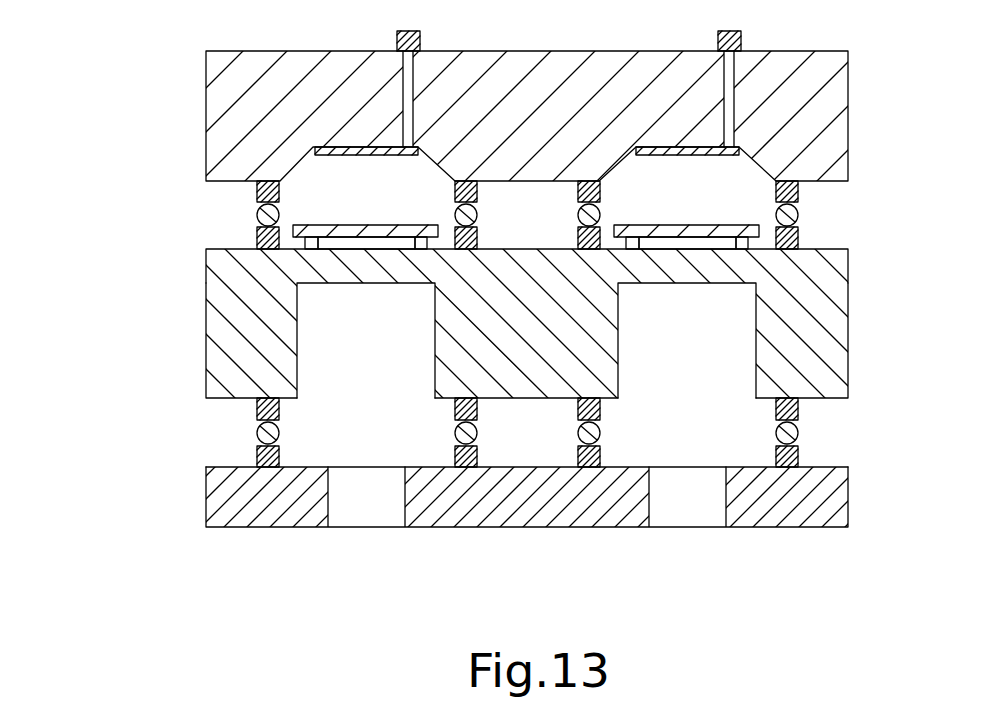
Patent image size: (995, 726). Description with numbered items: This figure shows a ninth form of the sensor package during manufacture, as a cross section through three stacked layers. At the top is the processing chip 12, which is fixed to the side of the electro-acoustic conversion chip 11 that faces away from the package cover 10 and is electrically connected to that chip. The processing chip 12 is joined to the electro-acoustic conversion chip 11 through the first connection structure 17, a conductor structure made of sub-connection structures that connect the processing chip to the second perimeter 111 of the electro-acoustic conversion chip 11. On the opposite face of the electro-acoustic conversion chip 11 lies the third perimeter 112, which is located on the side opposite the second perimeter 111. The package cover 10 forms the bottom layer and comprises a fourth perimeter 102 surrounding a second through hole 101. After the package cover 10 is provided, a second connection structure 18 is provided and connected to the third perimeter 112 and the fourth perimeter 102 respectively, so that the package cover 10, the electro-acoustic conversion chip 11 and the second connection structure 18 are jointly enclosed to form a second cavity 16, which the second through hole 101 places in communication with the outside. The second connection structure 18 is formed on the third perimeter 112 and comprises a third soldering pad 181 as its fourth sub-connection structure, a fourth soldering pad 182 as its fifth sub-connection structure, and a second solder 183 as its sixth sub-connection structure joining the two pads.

The package cover 10 is at (442, 534).
The second through hole 101 is at (367, 520).
The fourth perimeter 102 is at (203, 467).
The electro-acoustic conversion chip 11 is at (446, 428).
The second perimeter 111 is at (237, 249).
The third perimeter 112 is at (207, 398).
The processing chip 12 is at (252, 118).
The second cavity 16 is at (397, 440).
The first connection structure 17 is at (257, 215).
The second connection structure 18 is at (419, 429).
The third soldering pad 181 is at (257, 411).
The fourth soldering pad 182 is at (257, 458).
The second solder 183 is at (257, 437).